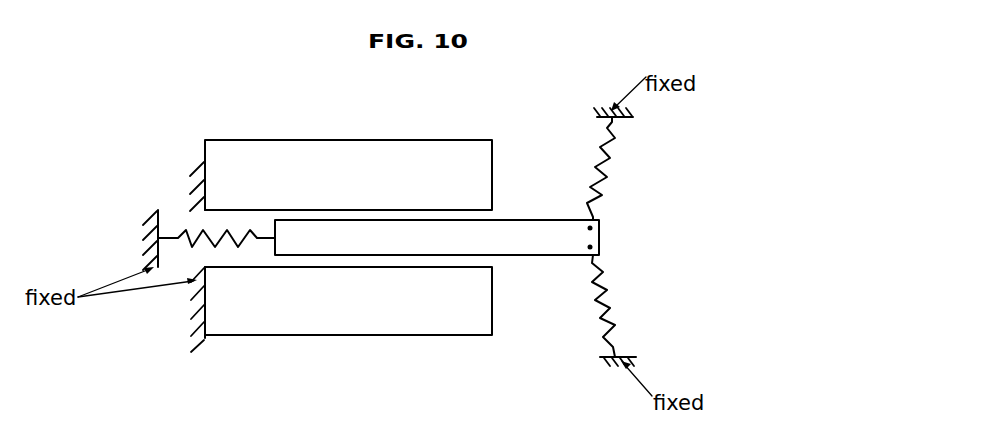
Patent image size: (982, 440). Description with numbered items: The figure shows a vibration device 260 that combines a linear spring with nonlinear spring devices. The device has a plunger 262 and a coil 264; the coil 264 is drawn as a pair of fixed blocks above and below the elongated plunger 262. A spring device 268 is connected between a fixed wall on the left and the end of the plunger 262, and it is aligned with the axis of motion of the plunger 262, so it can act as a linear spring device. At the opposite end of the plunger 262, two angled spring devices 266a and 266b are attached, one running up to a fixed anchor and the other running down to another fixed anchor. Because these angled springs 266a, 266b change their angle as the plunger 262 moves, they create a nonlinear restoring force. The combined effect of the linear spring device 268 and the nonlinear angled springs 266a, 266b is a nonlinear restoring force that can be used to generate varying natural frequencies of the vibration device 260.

The vibration device 260 is at (534, 97).
The plunger 262 is at (500, 220).
The coil 264 is at (386, 140).
The angled spring device 266a is at (612, 178).
The angled spring device 266b is at (615, 303).
The spring device 268 is at (183, 231).